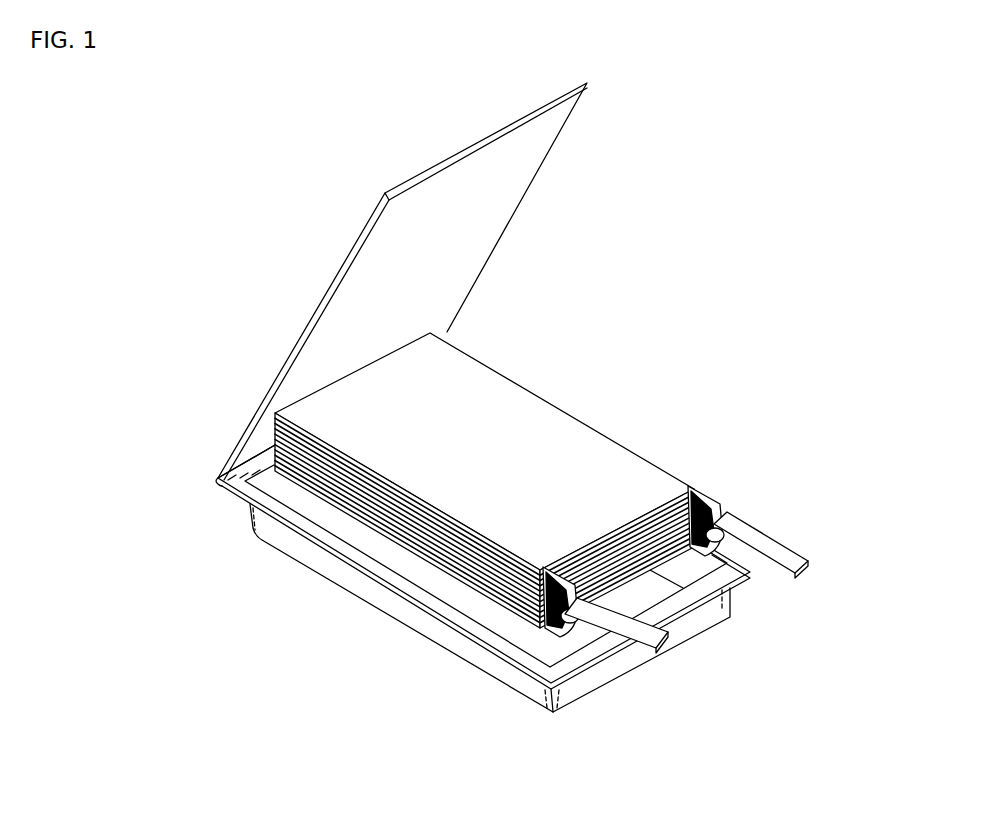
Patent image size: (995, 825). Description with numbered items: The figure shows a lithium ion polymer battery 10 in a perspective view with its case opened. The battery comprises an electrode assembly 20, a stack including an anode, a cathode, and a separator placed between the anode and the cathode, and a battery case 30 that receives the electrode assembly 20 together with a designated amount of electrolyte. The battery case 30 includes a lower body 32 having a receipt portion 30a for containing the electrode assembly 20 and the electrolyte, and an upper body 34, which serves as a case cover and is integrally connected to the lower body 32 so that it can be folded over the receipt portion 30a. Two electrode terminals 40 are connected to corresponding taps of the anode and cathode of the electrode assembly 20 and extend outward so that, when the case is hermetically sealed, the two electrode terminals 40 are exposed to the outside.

The lithium ion polymer battery 10 is at (173, 214).
The electrode assembly 20 is at (572, 402).
The battery case 30 is at (196, 477).
The receipt portion 30a is at (447, 591).
The lower body 32 is at (308, 558).
The upper body 34 is at (352, 283).
The electrode terminals 40 is at (662, 638).